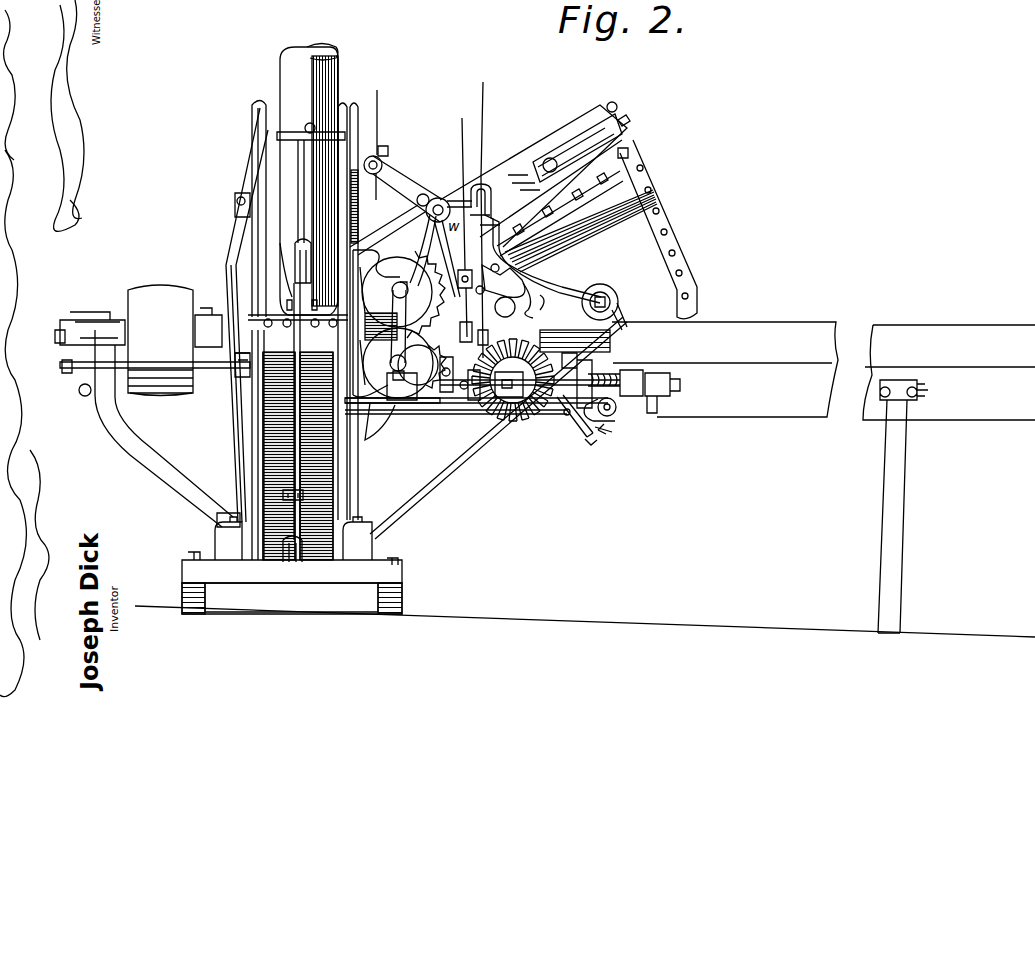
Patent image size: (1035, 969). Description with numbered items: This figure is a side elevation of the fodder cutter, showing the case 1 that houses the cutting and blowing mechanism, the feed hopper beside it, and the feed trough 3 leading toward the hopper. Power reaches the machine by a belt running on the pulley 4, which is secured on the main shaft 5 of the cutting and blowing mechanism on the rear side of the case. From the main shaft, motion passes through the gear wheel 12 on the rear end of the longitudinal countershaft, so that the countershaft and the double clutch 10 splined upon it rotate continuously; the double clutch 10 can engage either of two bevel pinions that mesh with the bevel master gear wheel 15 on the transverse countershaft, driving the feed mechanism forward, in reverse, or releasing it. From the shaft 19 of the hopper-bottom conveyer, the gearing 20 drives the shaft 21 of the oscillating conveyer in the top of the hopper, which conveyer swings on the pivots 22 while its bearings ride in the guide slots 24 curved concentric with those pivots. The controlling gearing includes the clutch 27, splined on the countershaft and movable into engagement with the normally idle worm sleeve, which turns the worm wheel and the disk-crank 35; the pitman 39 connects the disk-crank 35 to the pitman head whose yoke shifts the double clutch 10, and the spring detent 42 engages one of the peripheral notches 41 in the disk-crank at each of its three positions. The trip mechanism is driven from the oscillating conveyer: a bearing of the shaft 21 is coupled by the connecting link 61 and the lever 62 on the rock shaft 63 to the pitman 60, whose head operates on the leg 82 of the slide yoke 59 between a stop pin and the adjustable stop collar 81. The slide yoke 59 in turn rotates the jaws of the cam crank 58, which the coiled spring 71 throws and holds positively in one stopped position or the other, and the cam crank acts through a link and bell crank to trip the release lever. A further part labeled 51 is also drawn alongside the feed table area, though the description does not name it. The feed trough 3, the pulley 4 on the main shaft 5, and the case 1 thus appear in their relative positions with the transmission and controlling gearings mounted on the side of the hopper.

The case 1 is at (282, 432).
The feed trough 3 is at (949, 479).
The pulley 4 is at (175, 340).
The main shaft 5 is at (123, 318).
The double clutch 10 is at (545, 418).
The gear wheel 12 is at (418, 404).
The bevel master gear wheel 15 is at (518, 400).
The shaft of the hopper-bottom conveyer 19 is at (390, 404).
The gearing 20 is at (399, 325).
The shaft of the oscillating conveyer 21 is at (345, 318).
The pivots 22 is at (618, 303).
The guide slots 24 is at (383, 146).
The clutch 27 is at (648, 368).
The disk-crank 35 is at (595, 427).
The pitman 39 is at (527, 400).
The peripheral notches 41 is at (612, 432).
The spring detent 42 is at (592, 440).
The feed table 51 is at (612, 333).
The cam crank 58 is at (548, 191).
The slide yoke 59 is at (486, 205).
The pitman 60 is at (461, 217).
The connecting link 61 is at (407, 218).
The lever 62 is at (395, 182).
The rock shaft 63 is at (377, 119).
The coiled spring 71 is at (682, 342).
The stop collar 81 is at (635, 190).
The leg 82 is at (492, 186).